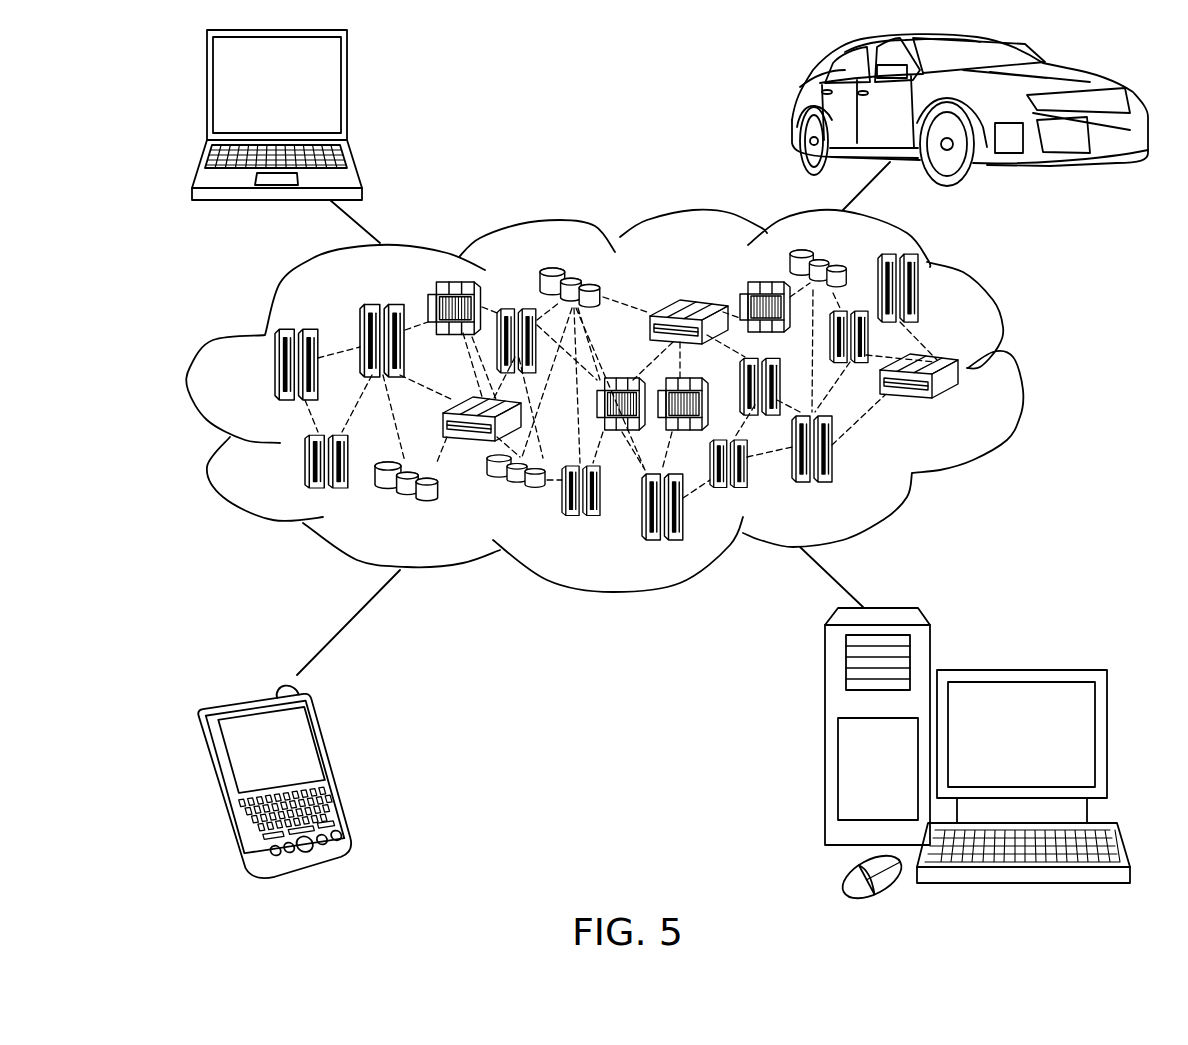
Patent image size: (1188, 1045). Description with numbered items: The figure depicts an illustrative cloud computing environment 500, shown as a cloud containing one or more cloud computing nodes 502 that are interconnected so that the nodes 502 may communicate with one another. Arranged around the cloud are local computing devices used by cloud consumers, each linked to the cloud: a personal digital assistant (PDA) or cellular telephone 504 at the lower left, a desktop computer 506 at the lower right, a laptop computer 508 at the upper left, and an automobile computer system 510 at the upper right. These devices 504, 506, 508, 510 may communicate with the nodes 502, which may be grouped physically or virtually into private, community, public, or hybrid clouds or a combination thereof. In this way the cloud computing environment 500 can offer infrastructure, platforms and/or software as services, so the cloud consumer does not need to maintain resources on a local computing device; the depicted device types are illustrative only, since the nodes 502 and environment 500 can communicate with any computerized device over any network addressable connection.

The cloud computing environment 500 is at (1022, 376).
The cloud computing nodes 502 is at (963, 405).
The personal digital assistant (PDA) or cellular telephone 504 is at (338, 760).
The desktop computer 506 is at (1020, 668).
The laptop computer 508 is at (347, 92).
The automobile computer system 510 is at (793, 108).